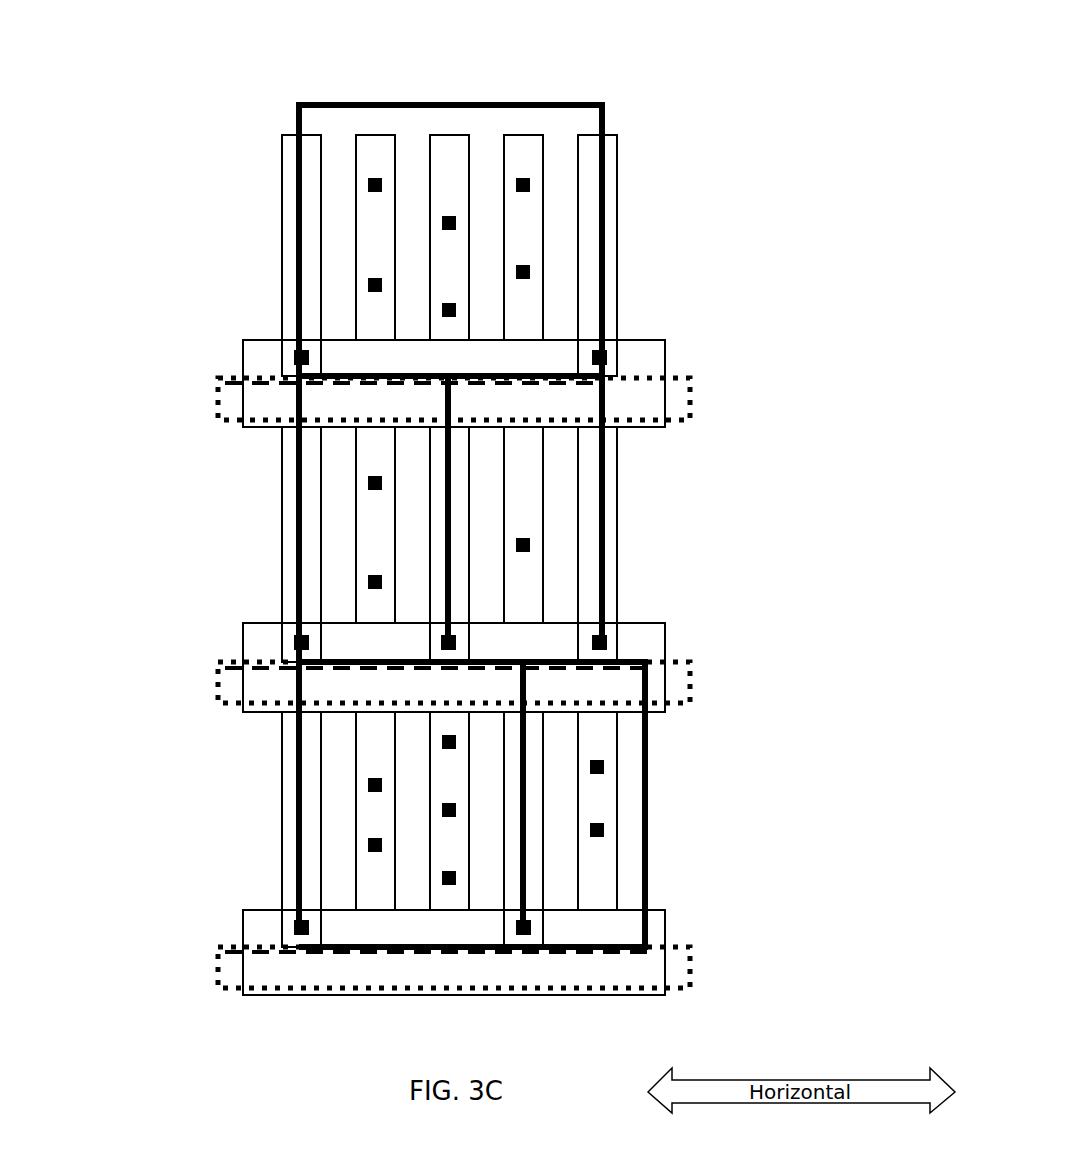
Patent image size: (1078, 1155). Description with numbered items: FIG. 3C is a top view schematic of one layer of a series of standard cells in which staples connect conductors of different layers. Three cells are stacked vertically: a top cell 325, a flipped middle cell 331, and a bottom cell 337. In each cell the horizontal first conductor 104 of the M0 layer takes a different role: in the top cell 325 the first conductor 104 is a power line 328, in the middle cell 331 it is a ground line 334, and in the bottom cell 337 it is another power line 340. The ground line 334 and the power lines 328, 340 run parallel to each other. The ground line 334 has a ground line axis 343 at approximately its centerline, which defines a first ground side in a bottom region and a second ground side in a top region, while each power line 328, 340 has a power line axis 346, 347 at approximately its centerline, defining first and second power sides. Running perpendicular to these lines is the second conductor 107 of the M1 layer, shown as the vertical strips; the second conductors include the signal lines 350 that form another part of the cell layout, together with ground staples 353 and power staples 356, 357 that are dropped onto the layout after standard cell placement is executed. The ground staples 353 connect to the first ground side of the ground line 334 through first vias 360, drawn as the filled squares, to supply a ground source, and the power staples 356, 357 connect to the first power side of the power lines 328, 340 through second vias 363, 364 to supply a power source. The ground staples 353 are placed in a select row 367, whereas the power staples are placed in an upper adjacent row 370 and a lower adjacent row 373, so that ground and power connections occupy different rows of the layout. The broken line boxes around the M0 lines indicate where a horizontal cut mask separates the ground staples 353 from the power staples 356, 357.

The first conductor (M0) 104 is at (417, 641).
The second conductor (M1) 107 is at (458, 190).
The top cell 325 is at (512, 190).
The power line 328 is at (666, 402).
The middle cell 331 is at (509, 544).
The ground line 334 is at (666, 688).
The bottom cell 337 is at (515, 829).
The power line 340 is at (666, 970).
The ground line axis 343 is at (657, 665).
The power line axis 346 is at (655, 380).
The power line axis 347 is at (655, 947).
The signal lines 350 is at (603, 108).
The ground staples 353 is at (278, 542).
The power staple 356 is at (281, 258).
The power staple 357 is at (278, 821).
The first vias 360 is at (448, 636).
The second via 363 is at (599, 350).
The second via 364 is at (523, 921).
The select row 367 is at (470, 543).
The upper adjacent row 370 is at (618, 257).
The lower adjacent row 373 is at (545, 826).